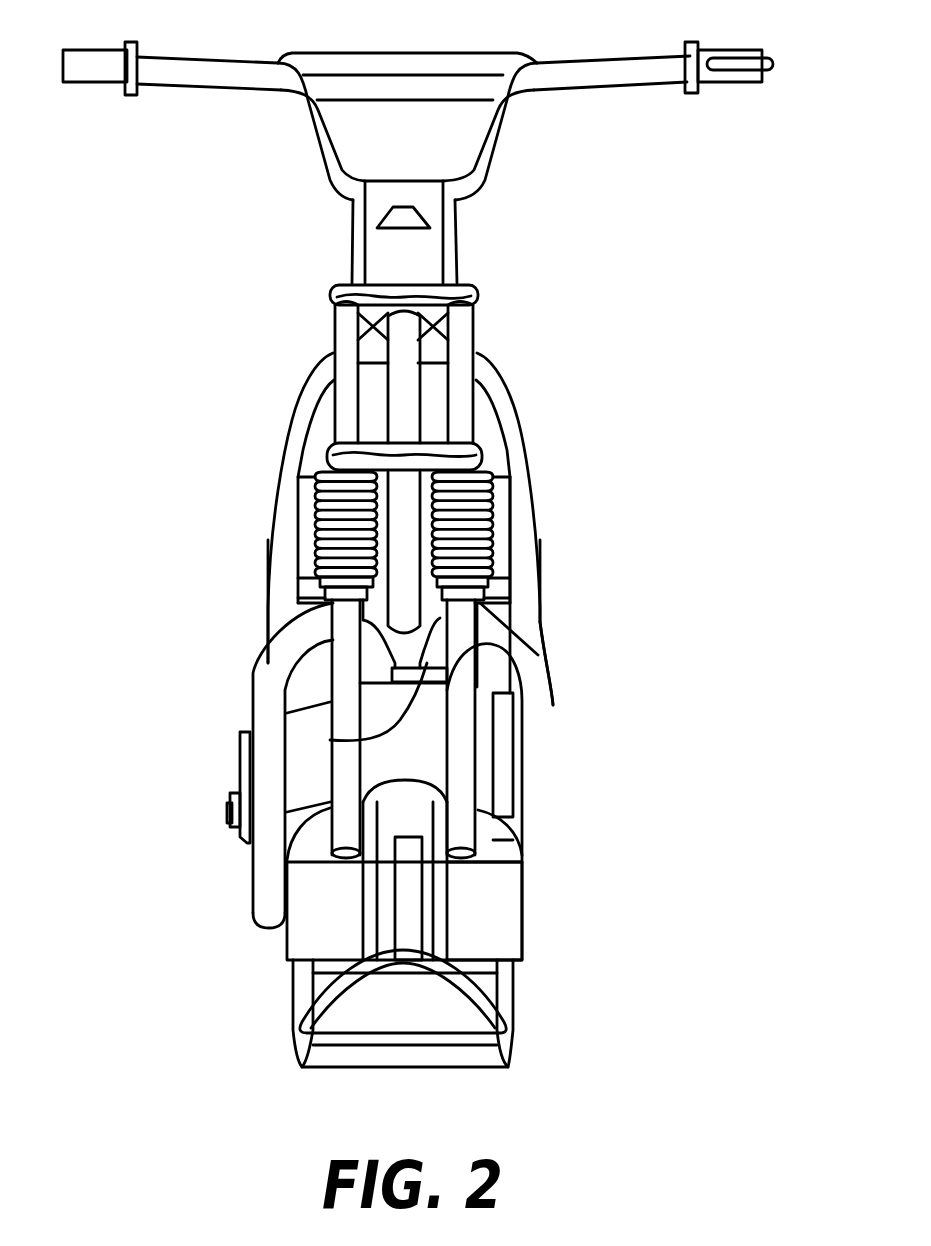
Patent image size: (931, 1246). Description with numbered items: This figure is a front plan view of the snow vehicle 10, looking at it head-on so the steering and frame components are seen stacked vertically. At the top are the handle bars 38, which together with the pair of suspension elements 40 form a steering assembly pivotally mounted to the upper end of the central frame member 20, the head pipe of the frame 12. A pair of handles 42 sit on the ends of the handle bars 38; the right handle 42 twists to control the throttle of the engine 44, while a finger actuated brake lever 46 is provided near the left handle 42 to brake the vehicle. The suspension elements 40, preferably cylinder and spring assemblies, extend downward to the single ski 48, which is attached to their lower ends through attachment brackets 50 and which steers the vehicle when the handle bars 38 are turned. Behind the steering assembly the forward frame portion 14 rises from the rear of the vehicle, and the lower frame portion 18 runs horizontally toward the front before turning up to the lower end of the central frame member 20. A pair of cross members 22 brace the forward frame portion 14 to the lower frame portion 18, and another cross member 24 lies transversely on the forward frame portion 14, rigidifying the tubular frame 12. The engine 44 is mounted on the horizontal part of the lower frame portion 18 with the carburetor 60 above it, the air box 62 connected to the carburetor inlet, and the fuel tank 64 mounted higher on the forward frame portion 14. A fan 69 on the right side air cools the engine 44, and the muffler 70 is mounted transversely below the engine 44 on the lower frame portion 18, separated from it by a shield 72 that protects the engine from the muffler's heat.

The snow vehicle 10 is at (722, 268).
The frame 12 is at (675, 527).
The forward frame portion 14 is at (517, 465).
The lower frame portion 18 is at (553, 708).
The central frame member 20 is at (405, 337).
The cross members 22 is at (527, 613).
The cross member 24 is at (500, 587).
The handle bars 38 is at (437, 53).
The suspension elements 40 is at (340, 512).
The handles 42 is at (740, 120).
The engine 44 is at (478, 645).
The brake lever 46 is at (773, 64).
The ski 48 is at (480, 990).
The attachment brackets 50 is at (365, 928).
The carburetor 60 is at (333, 738).
The air box 62 is at (333, 677).
The fuel tank 64 is at (320, 433).
The fan 69 is at (247, 781).
The muffler 70 is at (497, 917).
The shield 72 is at (548, 765).